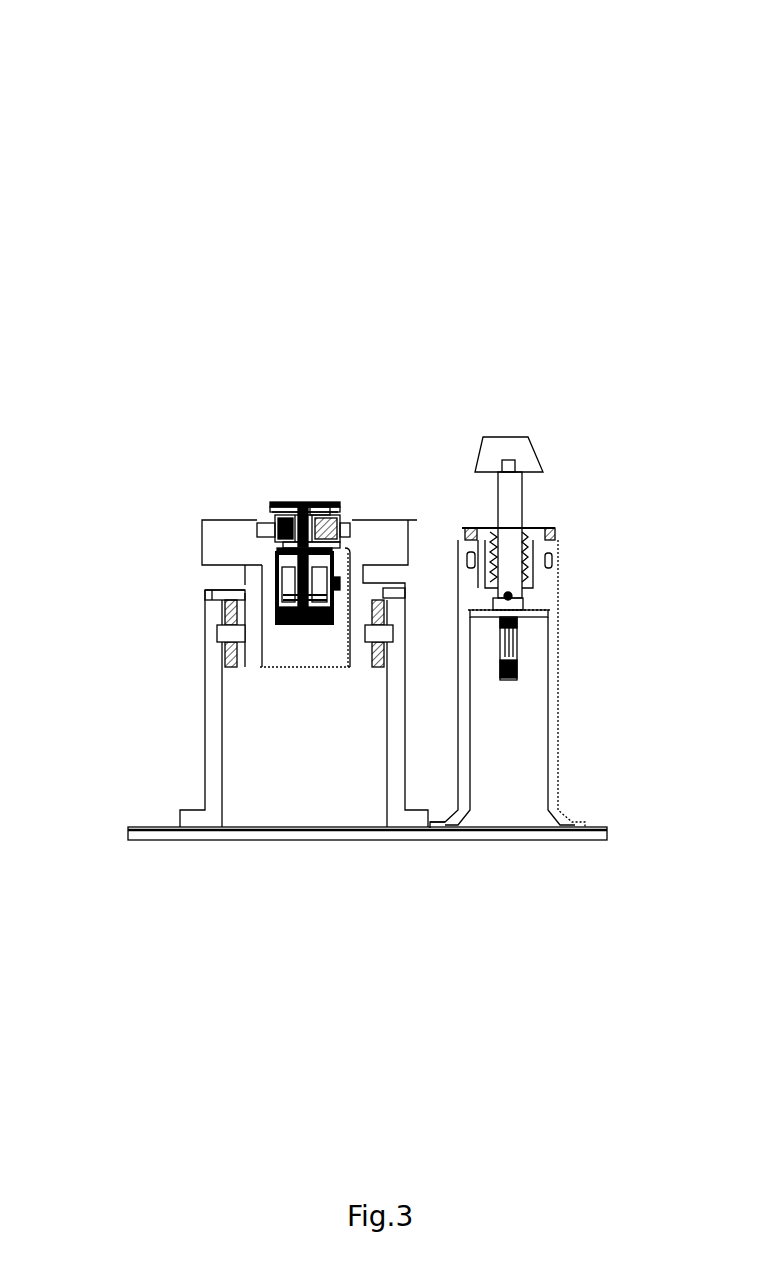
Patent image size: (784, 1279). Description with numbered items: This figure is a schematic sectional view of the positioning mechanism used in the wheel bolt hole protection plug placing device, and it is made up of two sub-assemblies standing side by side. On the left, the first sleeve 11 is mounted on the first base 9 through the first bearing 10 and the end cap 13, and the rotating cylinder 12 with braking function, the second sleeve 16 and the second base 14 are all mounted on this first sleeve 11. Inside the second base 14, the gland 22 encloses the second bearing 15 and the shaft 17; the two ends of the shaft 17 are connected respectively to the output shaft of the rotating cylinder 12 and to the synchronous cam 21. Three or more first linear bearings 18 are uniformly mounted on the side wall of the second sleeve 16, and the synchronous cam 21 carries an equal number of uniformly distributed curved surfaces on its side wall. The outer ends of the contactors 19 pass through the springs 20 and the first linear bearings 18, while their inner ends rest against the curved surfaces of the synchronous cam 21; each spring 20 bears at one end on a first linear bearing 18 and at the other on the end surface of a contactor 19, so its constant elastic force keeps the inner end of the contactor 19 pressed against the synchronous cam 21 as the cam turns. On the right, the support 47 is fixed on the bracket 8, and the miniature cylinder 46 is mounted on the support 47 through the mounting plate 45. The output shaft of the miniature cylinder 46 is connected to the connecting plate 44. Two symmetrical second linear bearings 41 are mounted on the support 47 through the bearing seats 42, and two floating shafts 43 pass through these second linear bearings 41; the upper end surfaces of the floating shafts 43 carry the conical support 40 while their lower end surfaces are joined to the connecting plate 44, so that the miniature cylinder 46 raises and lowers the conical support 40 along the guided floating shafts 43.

The bracket 8 is at (317, 914).
The first base 9 is at (136, 778).
The first bearing 10 is at (228, 719).
The first sleeve 11 is at (140, 724).
The rotating cylinder with braking function 12 is at (189, 662).
The end cap 13 is at (136, 647).
The second base 14 is at (180, 591).
The second bearing 15 is at (189, 528).
The second sleeve 16 is at (184, 481).
The shaft 17 is at (184, 448).
The first linear bearing 18 is at (183, 396).
The contactor 19 is at (184, 356).
The spring 20 is at (184, 323).
The synchronous cam 21 is at (168, 305).
The gland 22 is at (179, 257).
The conical support 40 is at (599, 353).
The second linear bearing 41 is at (592, 447).
The bearing seat 42 is at (604, 487).
The floating shaft 43 is at (595, 508).
The connecting plate 44 is at (608, 565).
The mounting plate 45 is at (595, 627).
The miniature cylinder 46 is at (611, 675).
The support 47 is at (576, 684).